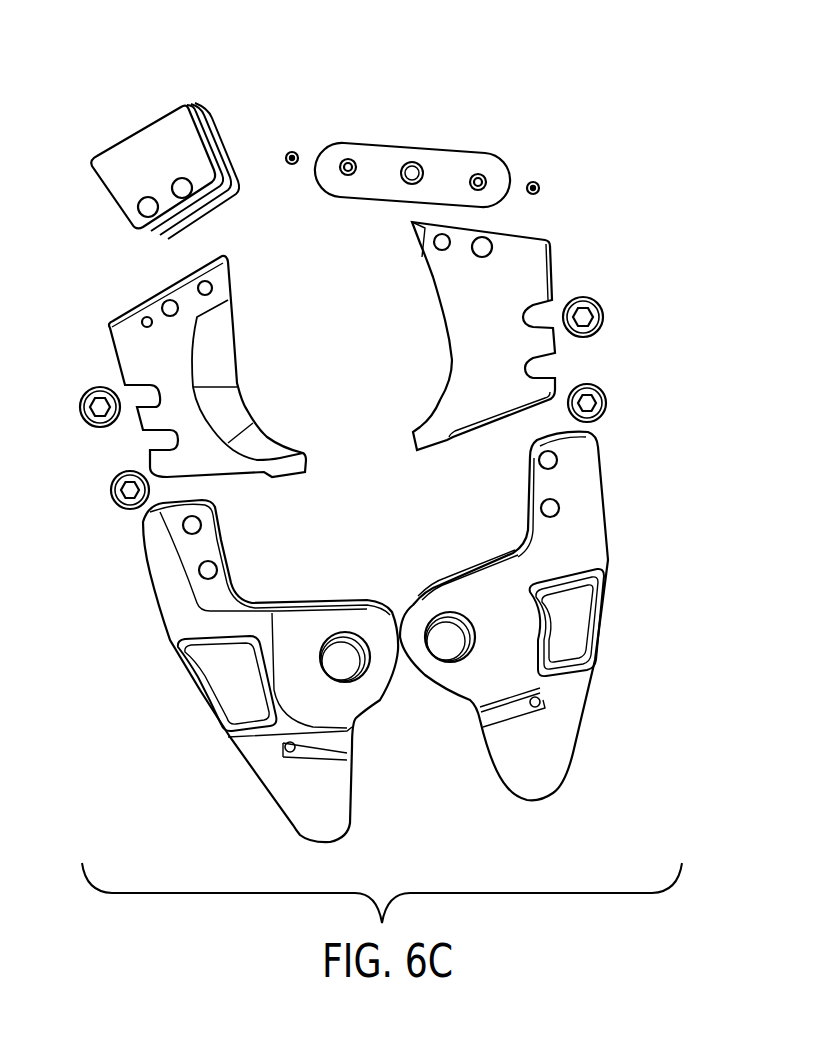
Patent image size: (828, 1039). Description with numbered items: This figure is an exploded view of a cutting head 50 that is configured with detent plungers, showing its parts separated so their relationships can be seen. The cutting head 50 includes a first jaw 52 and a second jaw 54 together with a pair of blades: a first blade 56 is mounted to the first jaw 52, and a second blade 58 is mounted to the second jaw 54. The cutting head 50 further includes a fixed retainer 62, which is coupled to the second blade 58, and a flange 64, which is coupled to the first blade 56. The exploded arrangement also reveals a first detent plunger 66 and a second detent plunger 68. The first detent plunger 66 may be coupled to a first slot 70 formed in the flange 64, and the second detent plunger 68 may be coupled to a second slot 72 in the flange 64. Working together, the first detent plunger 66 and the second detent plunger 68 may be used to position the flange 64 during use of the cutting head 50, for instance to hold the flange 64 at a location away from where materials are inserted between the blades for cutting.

The cutting head 50 is at (428, 96).
The first jaw 52 is at (593, 515).
The second jaw 54 is at (167, 600).
The first blade 56 is at (537, 267).
The second blade 58 is at (118, 337).
The fixed retainer 62 is at (123, 155).
The flange 64 is at (404, 155).
The first detent plunger 66 is at (289, 152).
The second detent plunger 68 is at (532, 181).
The first slot 70 is at (347, 160).
The second slot 72 is at (477, 176).